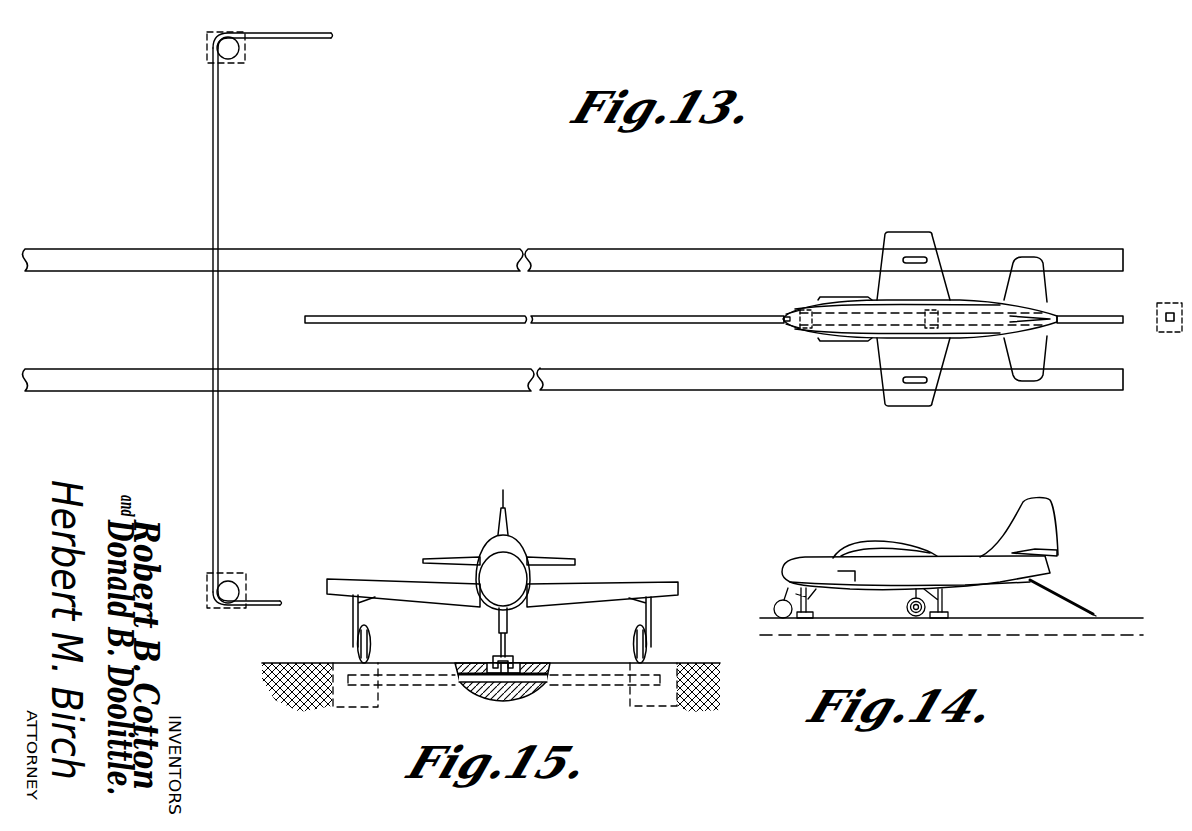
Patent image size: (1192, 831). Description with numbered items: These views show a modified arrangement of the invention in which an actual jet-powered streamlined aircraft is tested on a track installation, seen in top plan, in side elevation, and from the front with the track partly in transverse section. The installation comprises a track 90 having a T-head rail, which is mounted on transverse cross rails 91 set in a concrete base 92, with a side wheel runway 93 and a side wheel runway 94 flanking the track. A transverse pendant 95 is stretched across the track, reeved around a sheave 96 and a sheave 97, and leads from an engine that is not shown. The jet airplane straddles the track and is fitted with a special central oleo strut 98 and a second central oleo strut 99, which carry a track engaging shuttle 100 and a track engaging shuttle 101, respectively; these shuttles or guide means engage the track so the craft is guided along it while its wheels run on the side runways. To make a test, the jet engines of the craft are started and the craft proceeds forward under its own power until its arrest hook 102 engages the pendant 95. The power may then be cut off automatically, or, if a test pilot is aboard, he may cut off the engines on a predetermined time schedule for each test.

In FIG. 13, the track 90 is at (707, 316).
In FIG. 15, the track 90 is at (514, 666).
In FIG. 15, the transverse cross rails 91 is at (470, 663).
In FIG. 13, the concrete base 92 is at (739, 332).
In FIG. 15, the concrete base 92 is at (557, 665).
In FIG. 13, the side wheel runway 93 is at (813, 258).
In FIG. 15, the side wheel runway 93 is at (340, 663).
In FIG. 13, the side wheel runway 94 is at (731, 389).
In FIG. 15, the side wheel runway 94 is at (658, 663).
In FIG. 13, the transverse pendant 95 is at (219, 226).
In FIG. 13, the sheave 96 is at (240, 586).
In FIG. 13, the sheave 97 is at (246, 62).
In FIG. 14, the central oleo strut 98 is at (808, 604).
In FIG. 14, the central oleo strut 99 is at (943, 604).
In FIG. 14, the track engaging shuttle 100 is at (812, 622).
In FIG. 15, the track engaging shuttle 100 is at (508, 657).
In FIG. 14, the track engaging shuttle 101 is at (942, 622).
In FIG. 14, the arrest hook 102 is at (1094, 612).